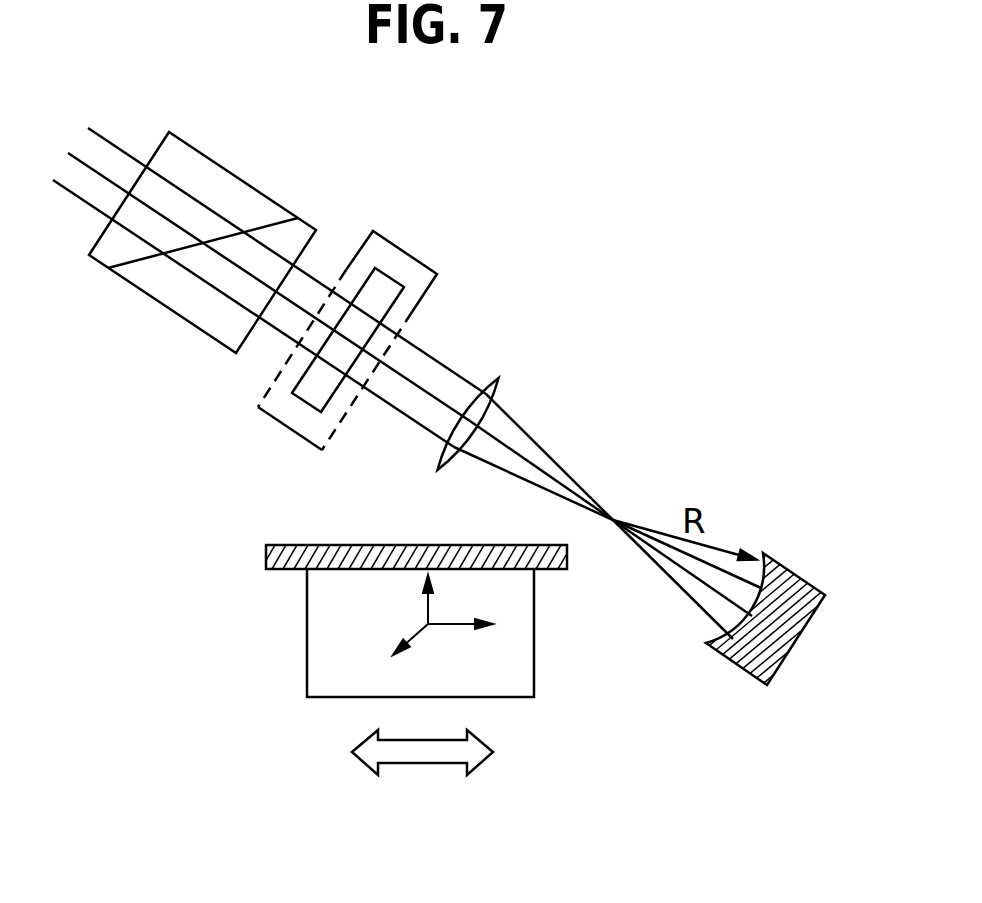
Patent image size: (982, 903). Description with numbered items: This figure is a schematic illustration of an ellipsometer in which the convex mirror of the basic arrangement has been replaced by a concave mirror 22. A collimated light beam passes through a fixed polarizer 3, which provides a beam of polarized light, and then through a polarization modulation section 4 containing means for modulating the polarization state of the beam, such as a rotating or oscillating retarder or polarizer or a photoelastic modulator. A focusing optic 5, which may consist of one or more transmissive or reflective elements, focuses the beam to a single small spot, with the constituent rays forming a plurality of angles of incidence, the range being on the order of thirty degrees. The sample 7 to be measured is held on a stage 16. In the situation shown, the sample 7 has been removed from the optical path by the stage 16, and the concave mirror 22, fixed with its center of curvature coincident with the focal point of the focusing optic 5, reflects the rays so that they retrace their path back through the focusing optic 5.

The fixed polarizer 3 is at (220, 165).
The polarization modulation section 4 is at (407, 248).
The focusing optic 5 is at (498, 378).
The sample 7 is at (266, 563).
The stage 16 is at (307, 625).
The concave mirror 22 is at (785, 570).